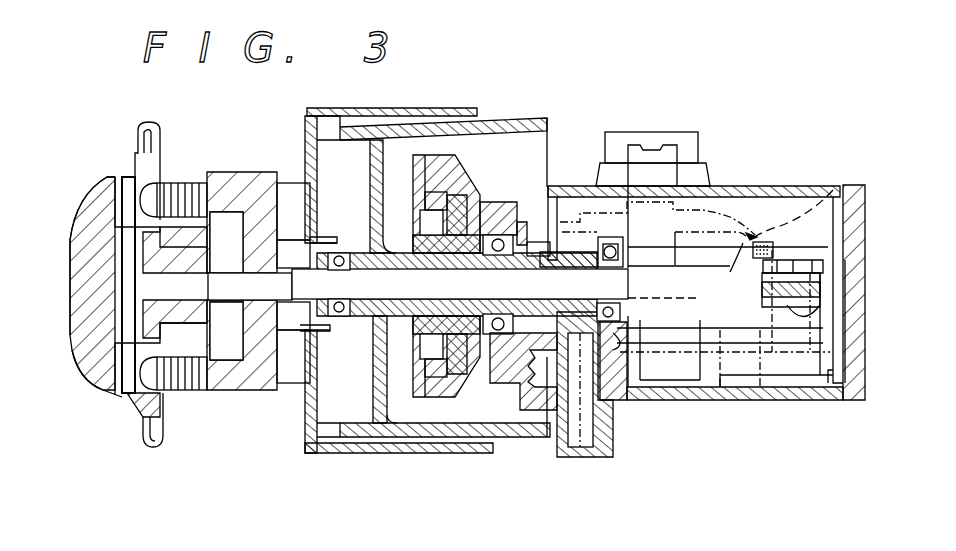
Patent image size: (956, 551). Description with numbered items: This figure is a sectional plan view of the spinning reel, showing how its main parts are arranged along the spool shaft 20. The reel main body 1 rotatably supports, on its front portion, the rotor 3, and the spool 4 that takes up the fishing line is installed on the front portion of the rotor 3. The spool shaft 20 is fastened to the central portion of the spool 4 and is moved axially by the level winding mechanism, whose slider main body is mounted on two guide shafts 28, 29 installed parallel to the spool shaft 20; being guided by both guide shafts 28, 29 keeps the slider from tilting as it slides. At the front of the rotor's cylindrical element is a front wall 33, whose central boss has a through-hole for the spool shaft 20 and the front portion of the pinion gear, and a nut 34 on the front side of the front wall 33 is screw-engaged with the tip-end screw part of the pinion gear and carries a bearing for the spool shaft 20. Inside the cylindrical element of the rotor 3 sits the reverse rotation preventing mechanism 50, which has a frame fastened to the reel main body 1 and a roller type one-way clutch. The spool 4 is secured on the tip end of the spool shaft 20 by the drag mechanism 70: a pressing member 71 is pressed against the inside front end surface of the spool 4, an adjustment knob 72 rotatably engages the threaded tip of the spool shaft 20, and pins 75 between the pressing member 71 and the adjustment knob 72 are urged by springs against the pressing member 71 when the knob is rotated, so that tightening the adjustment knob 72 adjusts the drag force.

The reel main body 1 is at (784, 184).
The rotor 3 is at (530, 117).
The spool 4 is at (256, 175).
The spool shaft 20 is at (647, 286).
The guide shaft 28 is at (833, 190).
The guide shaft 29 is at (732, 338).
The front wall 33 is at (375, 372).
The nut 34 is at (353, 250).
The reverse rotation preventing mechanism 50 is at (452, 398).
The drag mechanism 70 is at (81, 184).
The pressing member 71 is at (183, 325).
The adjustment knob 72 is at (95, 362).
The pins 75 is at (217, 347).